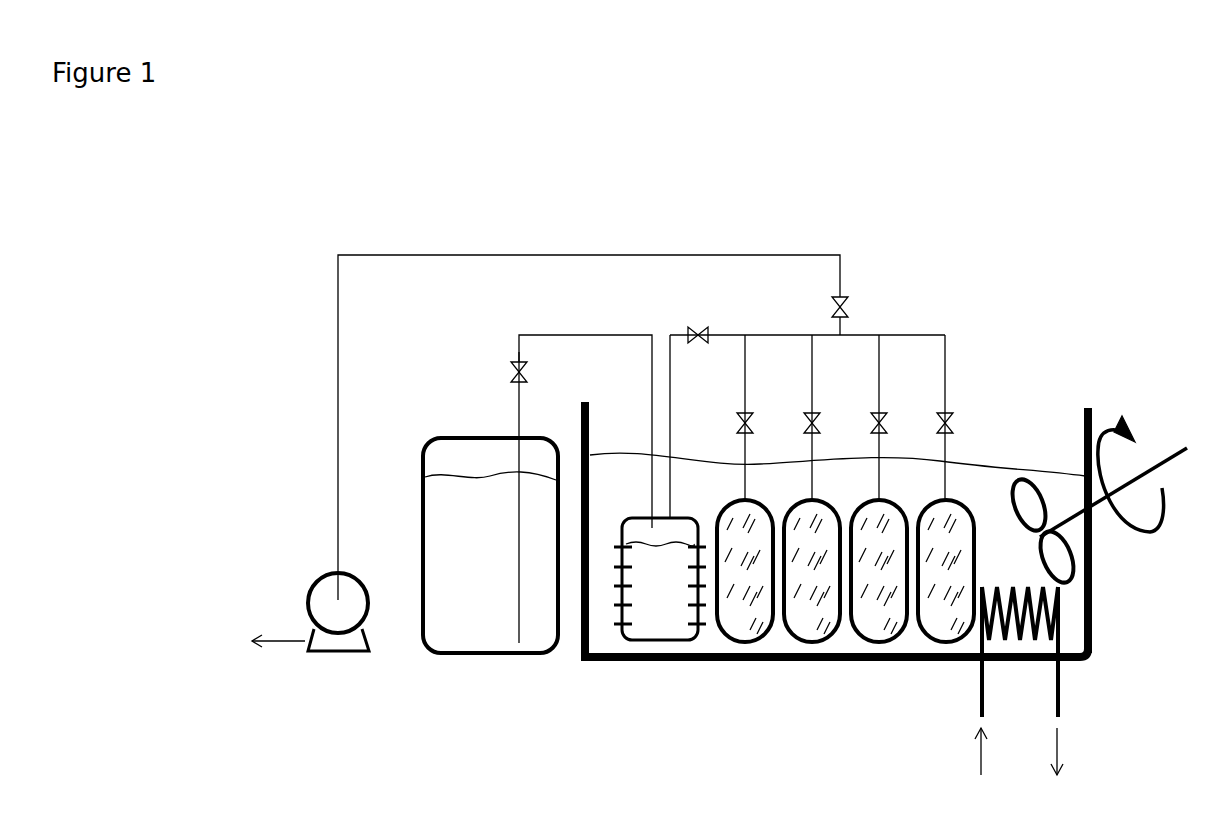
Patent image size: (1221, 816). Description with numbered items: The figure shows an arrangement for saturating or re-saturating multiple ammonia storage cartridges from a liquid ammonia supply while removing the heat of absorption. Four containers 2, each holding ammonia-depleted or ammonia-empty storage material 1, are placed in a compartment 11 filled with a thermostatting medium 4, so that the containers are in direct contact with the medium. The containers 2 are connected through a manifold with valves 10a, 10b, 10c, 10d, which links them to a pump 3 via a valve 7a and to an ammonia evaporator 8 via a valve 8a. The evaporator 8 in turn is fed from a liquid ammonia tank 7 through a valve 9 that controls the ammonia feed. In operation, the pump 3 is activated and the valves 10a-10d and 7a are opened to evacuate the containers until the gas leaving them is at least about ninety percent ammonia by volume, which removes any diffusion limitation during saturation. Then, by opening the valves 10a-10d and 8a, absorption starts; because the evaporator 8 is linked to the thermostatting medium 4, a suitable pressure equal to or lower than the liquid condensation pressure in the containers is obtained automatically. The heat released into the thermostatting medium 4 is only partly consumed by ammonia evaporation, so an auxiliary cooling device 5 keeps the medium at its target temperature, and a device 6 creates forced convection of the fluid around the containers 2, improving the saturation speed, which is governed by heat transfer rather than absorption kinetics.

The ammonia storage material 1 is at (845, 571).
The containers 2 is at (766, 641).
The pump 3 is at (310, 623).
The thermostatting medium 4 is at (837, 469).
The auxiliary cooling device 5 is at (1026, 681).
The forced convection device 6 is at (1096, 501).
The liquid ammonia tank 7 is at (490, 517).
The valve 7a is at (852, 305).
The ammonia evaporator 8 is at (660, 579).
The valve 8a is at (696, 324).
The valve 9 is at (504, 372).
The manifold valve 10a is at (758, 417).
The manifold valve 10b is at (830, 417).
The manifold valve 10c is at (895, 417).
The manifold valve 10d is at (962, 417).
The compartment 11 is at (1081, 520).